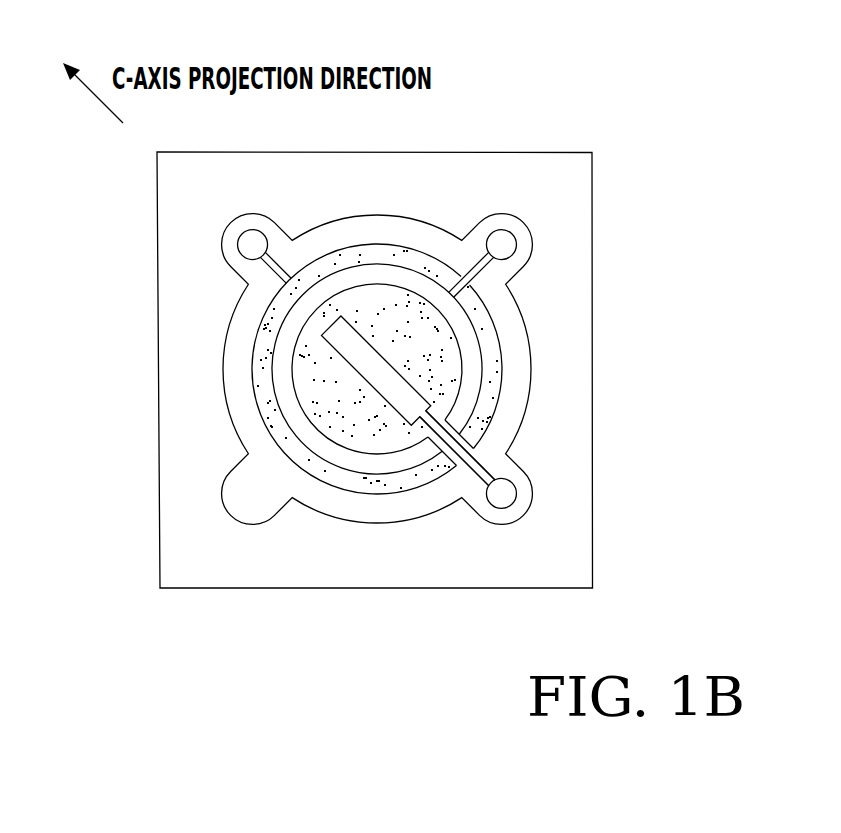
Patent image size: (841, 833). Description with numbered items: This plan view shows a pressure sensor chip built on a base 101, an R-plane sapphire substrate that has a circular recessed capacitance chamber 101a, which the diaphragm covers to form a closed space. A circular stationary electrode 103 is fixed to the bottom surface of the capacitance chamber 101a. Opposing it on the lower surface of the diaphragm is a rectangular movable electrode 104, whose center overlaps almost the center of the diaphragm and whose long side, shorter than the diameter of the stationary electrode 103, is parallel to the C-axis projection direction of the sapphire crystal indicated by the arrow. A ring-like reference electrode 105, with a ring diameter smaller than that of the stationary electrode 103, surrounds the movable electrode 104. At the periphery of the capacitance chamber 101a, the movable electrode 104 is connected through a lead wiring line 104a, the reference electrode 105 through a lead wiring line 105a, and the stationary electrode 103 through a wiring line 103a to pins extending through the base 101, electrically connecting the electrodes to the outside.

The base 101 is at (572, 266).
The capacitance chamber 101a is at (387, 233).
The stationary electrode 103 is at (275, 422).
The wiring line 103a is at (262, 285).
The movable electrode 104 is at (367, 360).
The lead wiring line 104a is at (472, 478).
The reference electrode 105 is at (473, 376).
The lead wiring line 105a is at (473, 257).